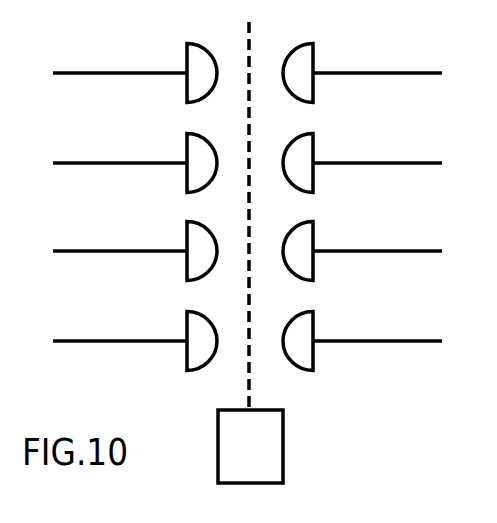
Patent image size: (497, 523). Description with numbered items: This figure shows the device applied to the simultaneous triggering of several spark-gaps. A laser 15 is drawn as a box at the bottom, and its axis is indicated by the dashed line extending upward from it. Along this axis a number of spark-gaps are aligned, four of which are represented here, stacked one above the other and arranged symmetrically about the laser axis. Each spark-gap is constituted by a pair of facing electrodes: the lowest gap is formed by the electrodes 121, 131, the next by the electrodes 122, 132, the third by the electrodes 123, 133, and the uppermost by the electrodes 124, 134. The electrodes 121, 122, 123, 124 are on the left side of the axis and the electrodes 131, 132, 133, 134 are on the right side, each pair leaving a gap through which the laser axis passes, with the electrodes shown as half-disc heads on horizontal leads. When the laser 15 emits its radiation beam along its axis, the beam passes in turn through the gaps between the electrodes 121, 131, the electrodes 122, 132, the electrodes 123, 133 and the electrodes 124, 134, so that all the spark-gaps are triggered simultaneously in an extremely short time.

The electrode 121 is at (135, 341).
The electrode 122 is at (135, 252).
The electrode 123 is at (135, 163).
The electrode 124 is at (135, 74).
The electrode 131 is at (362, 342).
The electrode 132 is at (362, 253).
The electrode 133 is at (362, 163).
The electrode 134 is at (362, 74).
The laser 15 is at (283, 459).